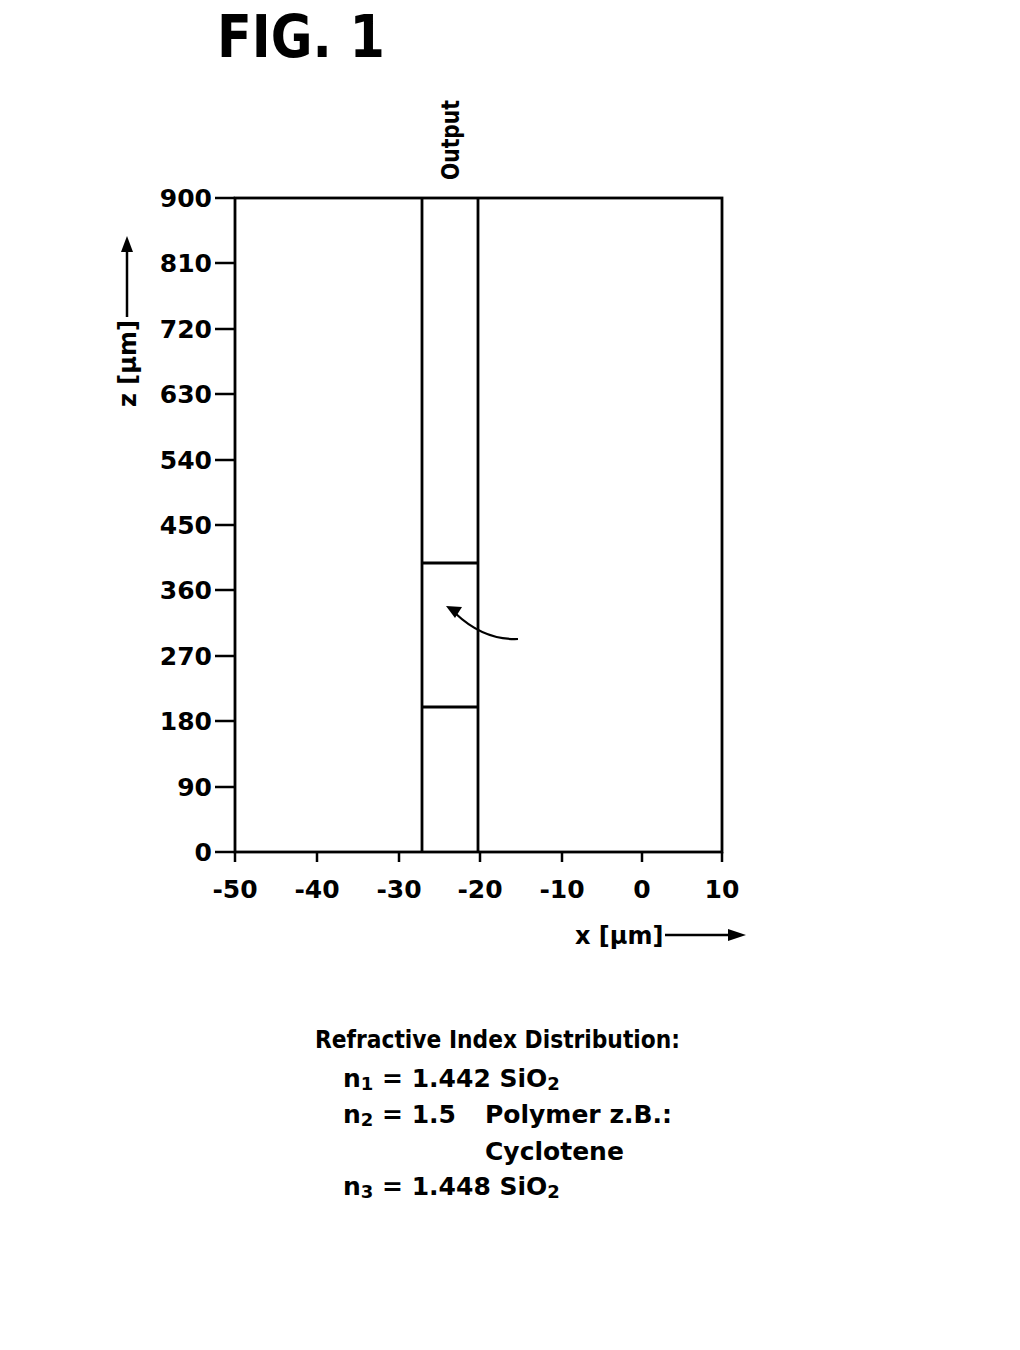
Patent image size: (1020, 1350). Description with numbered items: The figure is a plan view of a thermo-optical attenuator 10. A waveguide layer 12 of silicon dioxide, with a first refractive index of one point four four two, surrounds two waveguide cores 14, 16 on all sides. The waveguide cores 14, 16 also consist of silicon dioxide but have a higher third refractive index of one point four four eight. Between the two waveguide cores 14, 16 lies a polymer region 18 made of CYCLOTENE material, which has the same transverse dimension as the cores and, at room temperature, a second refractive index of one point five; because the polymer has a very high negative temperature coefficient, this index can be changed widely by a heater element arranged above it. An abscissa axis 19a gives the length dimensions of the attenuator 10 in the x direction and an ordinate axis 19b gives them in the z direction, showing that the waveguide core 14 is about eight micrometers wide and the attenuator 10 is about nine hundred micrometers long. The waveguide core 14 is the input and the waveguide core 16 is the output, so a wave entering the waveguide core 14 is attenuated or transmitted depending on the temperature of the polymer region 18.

The thermo-optical attenuator 10 is at (640, 135).
The waveguide layer 12 is at (348, 523).
The waveguide core 14 is at (478, 762).
The waveguide core 16 is at (478, 320).
The polymer region 18 is at (478, 580).
The abscissa axis 19a is at (523, 853).
The ordinate axis 19b is at (235, 487).